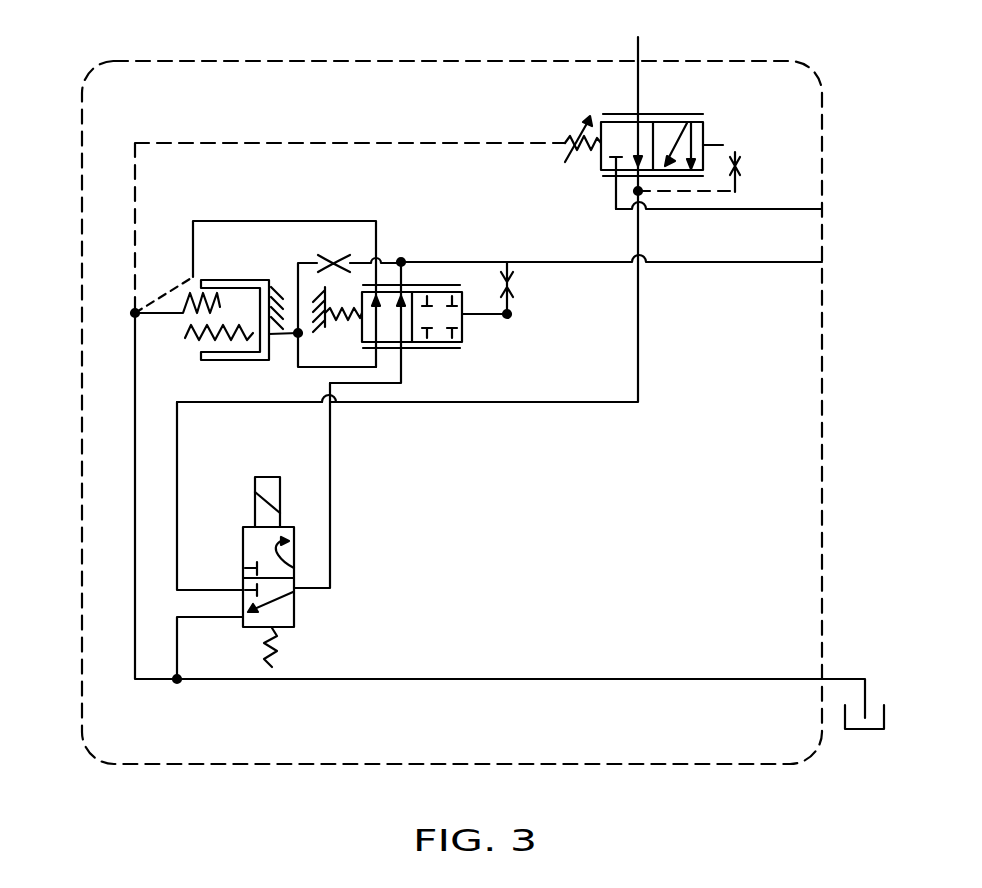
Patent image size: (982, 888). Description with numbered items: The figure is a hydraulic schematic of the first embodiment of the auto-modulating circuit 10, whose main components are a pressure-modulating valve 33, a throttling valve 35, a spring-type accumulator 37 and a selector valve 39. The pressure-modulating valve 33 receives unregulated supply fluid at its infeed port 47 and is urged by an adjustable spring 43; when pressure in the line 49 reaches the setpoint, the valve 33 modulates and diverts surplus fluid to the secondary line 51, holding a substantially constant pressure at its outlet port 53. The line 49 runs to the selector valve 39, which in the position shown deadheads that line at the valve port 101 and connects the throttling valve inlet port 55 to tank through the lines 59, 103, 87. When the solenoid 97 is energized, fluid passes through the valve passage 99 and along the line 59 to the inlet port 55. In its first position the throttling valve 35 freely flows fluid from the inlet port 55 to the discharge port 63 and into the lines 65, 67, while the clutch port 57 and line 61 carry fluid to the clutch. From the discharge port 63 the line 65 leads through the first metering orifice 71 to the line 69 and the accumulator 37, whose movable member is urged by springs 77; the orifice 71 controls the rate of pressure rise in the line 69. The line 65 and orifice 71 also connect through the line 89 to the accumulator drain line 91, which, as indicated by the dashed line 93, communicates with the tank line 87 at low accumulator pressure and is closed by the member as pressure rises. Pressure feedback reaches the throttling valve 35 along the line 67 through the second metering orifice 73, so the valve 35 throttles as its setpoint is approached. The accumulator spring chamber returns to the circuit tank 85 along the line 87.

The circuit 10 is at (83, 80).
The pressure-modulating valve 33 is at (703, 127).
The throttling valve 35 is at (463, 334).
The spring-type accumulator 37 is at (213, 360).
The selector valve 39 is at (295, 602).
The spring 43 is at (589, 165).
The infeed port 47 is at (638, 40).
The line 49 is at (640, 235).
The secondary line 51 is at (757, 209).
The outlet port 53 is at (634, 188).
The inlet port 55 is at (403, 362).
The clutch port 57 is at (822, 262).
The line 59 is at (330, 502).
The line 61 is at (718, 262).
The discharge port 63 is at (403, 273).
The line 65 is at (377, 256).
The line 67 is at (484, 316).
The line 69 is at (298, 333).
The metering orifice 71 is at (333, 262).
The second metering orifice 73 is at (513, 290).
The springs 77 is at (185, 338).
The circuit tank 85 is at (872, 730).
The line 87 is at (135, 398).
The line 89 is at (360, 367).
The accumulator drain line 91 is at (193, 240).
The dashed line 93 is at (168, 293).
The solenoid 97 is at (255, 488).
The valve passage 99 is at (294, 568).
The valve port 101 is at (243, 593).
The line 103 is at (178, 645).